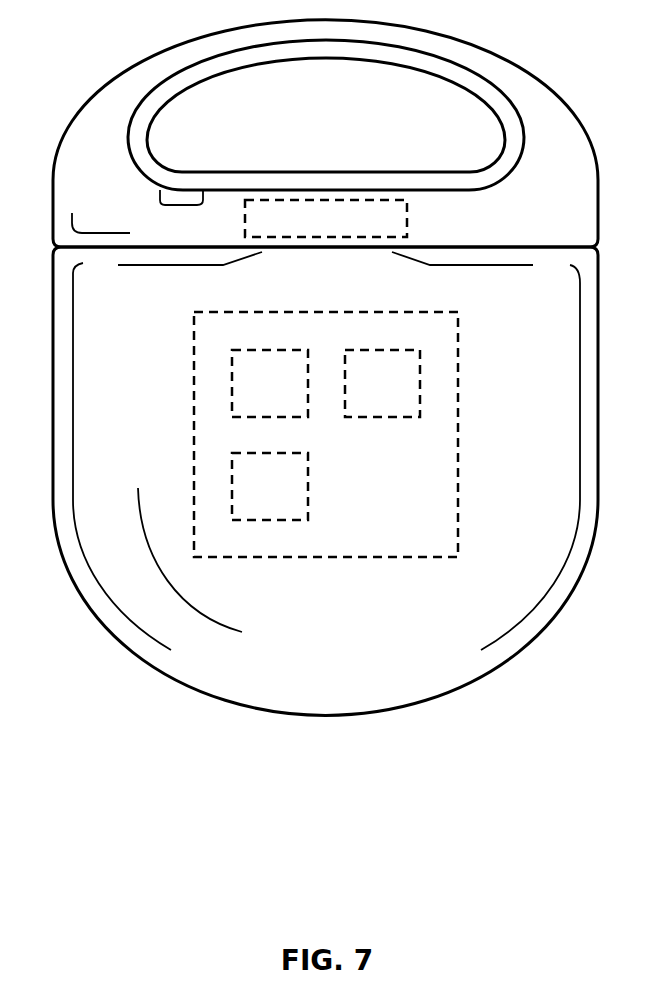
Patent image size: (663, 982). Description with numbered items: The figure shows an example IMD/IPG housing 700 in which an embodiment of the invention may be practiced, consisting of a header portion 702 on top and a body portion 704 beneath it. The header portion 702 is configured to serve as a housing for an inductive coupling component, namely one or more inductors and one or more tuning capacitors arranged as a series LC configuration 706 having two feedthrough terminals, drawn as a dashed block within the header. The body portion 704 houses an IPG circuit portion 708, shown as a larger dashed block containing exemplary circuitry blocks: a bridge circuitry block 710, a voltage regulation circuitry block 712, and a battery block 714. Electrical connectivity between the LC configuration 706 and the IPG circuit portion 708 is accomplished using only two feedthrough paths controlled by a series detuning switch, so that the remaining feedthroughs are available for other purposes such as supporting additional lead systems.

The IMD/IPG housing 700 is at (147, 828).
The header portion 702 is at (525, 65).
The body portion 704 is at (123, 643).
The series LC configuration 706 is at (326, 218).
The IPG circuit portion 708 is at (326, 434).
The bridge circuitry portion block 710 is at (270, 383).
The voltage regulation circuitry portion block 712 is at (382, 383).
The battery block 714 is at (270, 486).